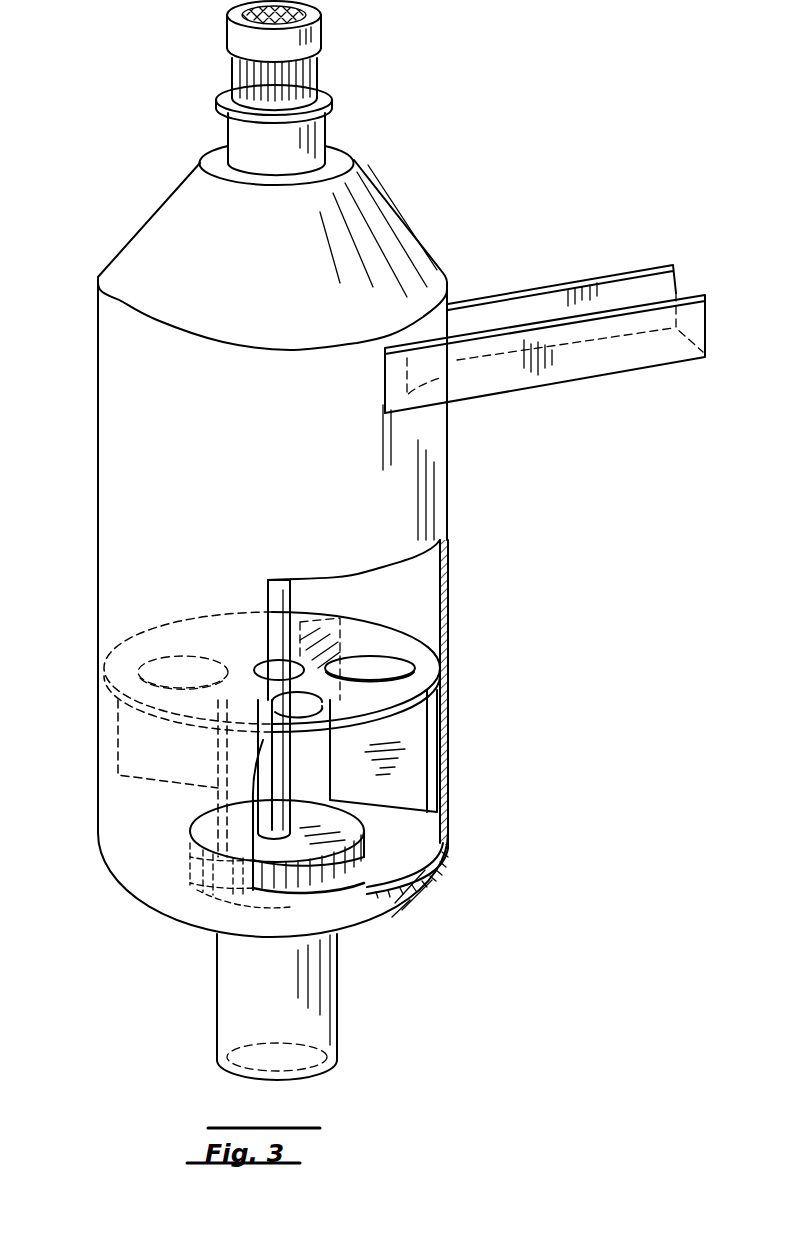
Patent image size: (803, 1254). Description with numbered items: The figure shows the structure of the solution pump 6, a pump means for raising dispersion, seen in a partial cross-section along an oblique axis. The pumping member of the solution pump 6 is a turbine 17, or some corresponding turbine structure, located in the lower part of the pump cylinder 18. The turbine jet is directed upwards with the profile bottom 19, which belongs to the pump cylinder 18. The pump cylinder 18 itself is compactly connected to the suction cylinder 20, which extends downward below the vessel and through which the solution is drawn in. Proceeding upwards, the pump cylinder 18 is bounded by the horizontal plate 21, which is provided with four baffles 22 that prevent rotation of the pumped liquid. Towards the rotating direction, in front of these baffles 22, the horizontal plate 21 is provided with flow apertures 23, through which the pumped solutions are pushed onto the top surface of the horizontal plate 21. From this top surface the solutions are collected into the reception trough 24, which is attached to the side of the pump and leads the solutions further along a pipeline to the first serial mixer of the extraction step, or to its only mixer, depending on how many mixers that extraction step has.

The solution pump 6 is at (408, 204).
The turbine 17 is at (363, 865).
The pump cylinder 18 is at (456, 817).
The profile bottom 19 is at (410, 908).
The suction cylinder 20 is at (325, 1017).
The horizontal plate 21 is at (427, 660).
The baffles 22 is at (332, 740).
The flow apertures 23 is at (160, 680).
The reception trough 24 is at (545, 305).